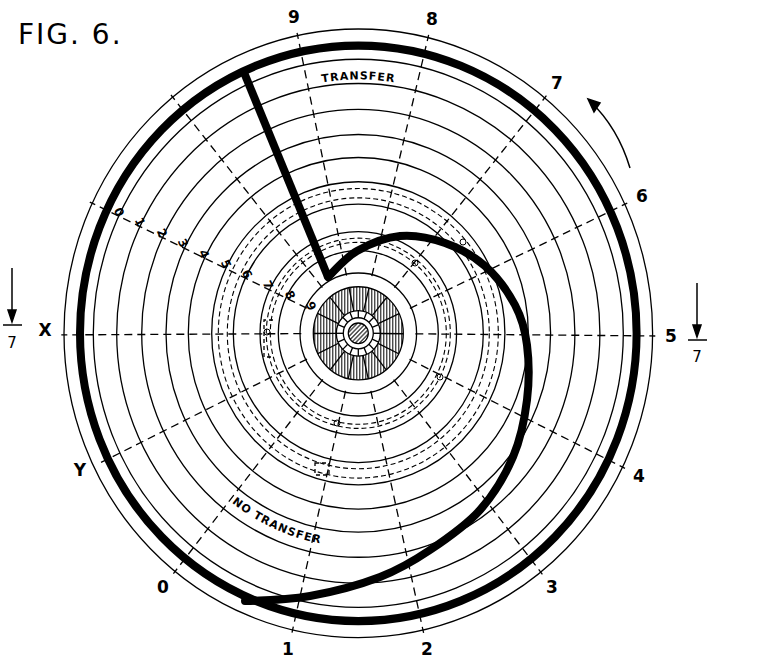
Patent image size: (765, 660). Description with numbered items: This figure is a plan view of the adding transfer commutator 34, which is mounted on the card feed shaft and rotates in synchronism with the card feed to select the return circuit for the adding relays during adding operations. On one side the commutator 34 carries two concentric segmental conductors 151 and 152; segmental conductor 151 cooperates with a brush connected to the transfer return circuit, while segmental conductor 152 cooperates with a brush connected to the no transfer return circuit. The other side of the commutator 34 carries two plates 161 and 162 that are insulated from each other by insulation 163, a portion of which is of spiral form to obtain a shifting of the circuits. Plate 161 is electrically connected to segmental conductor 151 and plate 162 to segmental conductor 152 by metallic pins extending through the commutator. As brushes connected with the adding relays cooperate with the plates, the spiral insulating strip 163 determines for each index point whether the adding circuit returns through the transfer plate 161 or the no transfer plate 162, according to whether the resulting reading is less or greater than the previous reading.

The adding transfer commutator 34 is at (540, 108).
The segmental conductor 151 is at (358, 334).
The segmental conductor 152 is at (365, 333).
The plate 161 is at (608, 426).
The plate 162 is at (108, 380).
The insulation 163 is at (531, 398).